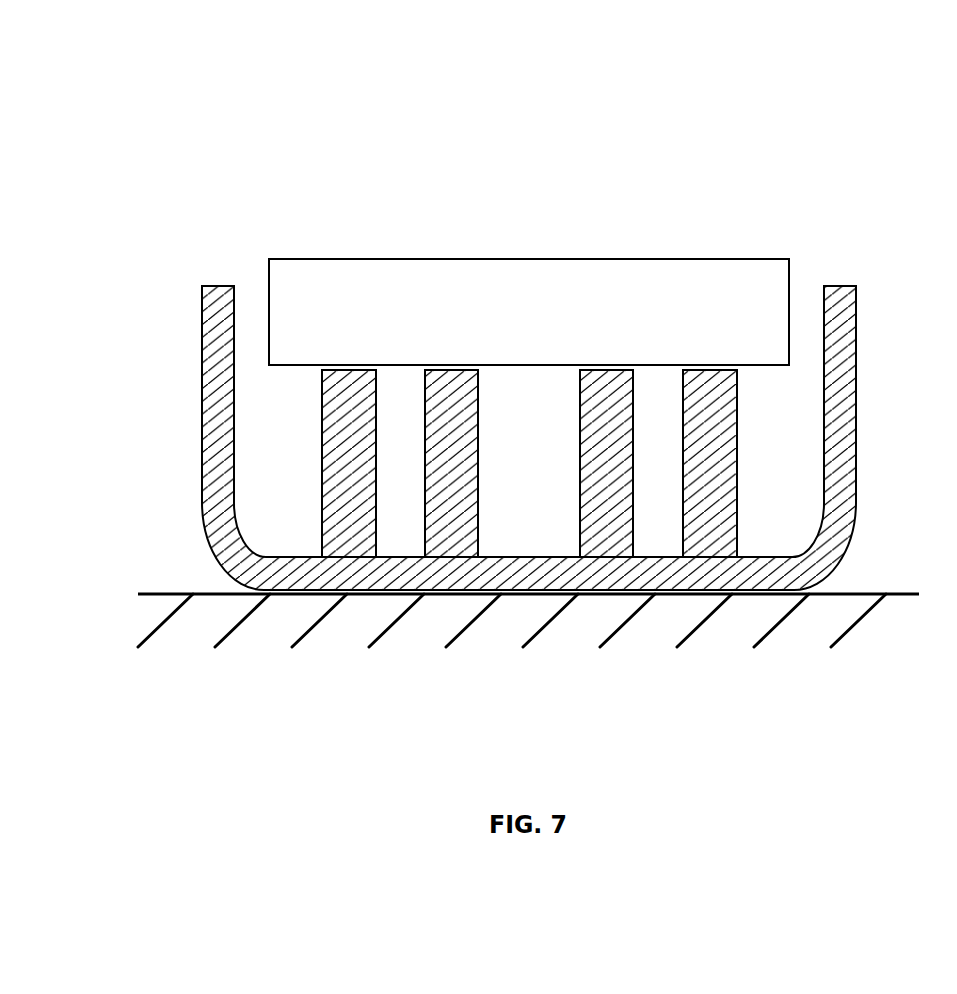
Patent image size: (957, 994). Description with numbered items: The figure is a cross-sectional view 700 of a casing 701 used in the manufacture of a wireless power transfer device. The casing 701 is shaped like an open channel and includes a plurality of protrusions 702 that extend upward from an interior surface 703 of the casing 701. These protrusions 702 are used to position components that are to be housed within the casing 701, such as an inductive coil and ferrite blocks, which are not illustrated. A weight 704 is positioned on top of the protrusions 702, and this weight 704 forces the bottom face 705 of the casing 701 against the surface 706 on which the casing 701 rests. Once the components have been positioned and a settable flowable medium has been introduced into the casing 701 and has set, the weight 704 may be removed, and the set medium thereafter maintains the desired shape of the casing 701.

The heat sink assembly 700 is at (317, 92).
The casing 701 is at (214, 285).
The protrusions 702 is at (737, 489).
The interior surface 703 is at (255, 550).
The weight 704 is at (520, 259).
The bottom face 705 is at (832, 568).
The surface 706 is at (162, 592).